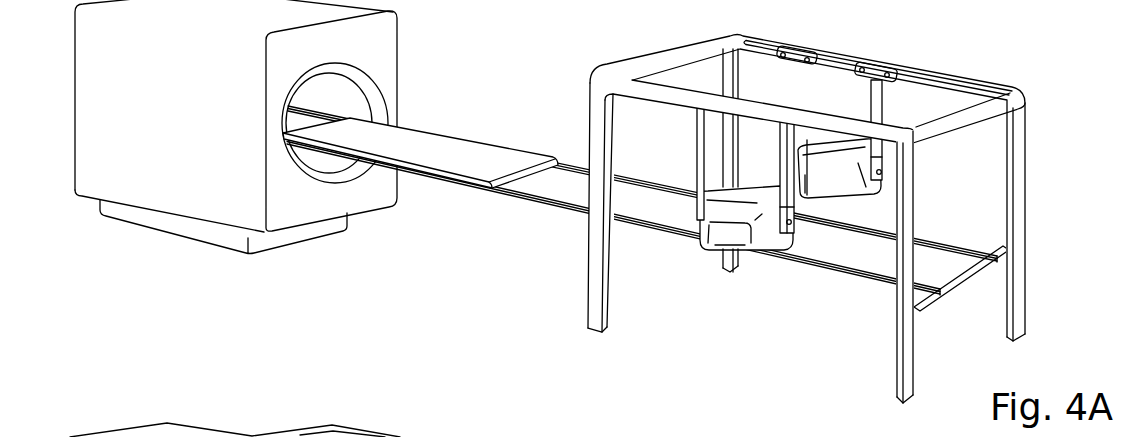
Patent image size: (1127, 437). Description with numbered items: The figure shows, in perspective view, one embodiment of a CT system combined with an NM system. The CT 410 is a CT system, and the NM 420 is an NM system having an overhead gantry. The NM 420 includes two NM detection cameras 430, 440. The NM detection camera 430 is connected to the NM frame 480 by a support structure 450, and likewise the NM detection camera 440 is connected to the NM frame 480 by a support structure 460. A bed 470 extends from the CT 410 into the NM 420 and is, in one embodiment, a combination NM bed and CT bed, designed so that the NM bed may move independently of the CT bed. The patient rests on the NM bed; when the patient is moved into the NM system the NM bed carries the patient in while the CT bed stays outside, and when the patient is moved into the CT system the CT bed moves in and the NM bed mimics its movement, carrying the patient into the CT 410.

The CT system 410 is at (58, 137).
The NM system 420 is at (590, 362).
The NM detection camera 430 is at (858, 205).
The NM detection camera 440 is at (773, 237).
The support structure 450 is at (882, 97).
The support structure 460 is at (700, 157).
The bed 470 is at (460, 153).
The NM frame 480 is at (912, 390).